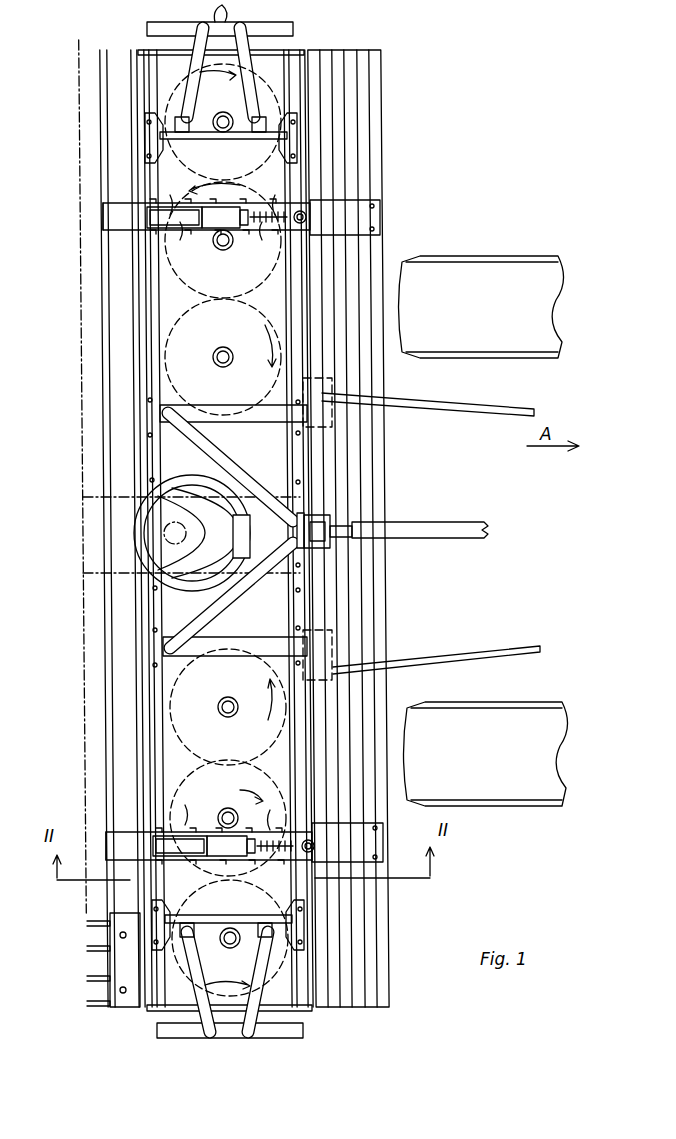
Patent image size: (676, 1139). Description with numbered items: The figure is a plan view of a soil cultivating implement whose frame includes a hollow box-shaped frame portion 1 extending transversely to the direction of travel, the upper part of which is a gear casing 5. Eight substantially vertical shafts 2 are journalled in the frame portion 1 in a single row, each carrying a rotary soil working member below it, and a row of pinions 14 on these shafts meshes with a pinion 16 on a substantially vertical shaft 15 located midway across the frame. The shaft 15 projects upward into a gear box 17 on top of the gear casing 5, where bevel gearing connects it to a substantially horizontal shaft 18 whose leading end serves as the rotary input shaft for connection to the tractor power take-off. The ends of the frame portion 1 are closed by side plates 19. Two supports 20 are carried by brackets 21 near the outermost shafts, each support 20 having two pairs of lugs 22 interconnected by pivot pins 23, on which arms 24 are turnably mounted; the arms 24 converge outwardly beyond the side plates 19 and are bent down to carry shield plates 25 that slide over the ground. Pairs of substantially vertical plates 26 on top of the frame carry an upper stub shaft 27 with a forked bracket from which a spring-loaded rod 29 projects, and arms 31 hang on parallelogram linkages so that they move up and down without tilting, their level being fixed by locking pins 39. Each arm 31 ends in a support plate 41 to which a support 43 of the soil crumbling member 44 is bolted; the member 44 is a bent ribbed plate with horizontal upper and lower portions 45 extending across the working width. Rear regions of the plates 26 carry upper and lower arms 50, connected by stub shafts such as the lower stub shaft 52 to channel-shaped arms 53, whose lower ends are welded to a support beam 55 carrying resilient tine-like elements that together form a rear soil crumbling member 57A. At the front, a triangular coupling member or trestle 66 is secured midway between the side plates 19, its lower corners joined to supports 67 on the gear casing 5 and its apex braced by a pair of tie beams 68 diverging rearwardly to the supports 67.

The hollow box-shaped frame portion 1 is at (143, 688).
The shafts 2 is at (222, 112).
The upper gear casing 5 is at (160, 366).
The pinions 14 is at (192, 318).
The substantially vertical shaft 15 is at (148, 535).
The pinion 16 is at (140, 520).
The gear box 17 is at (178, 545).
The substantially horizontal shaft 18 is at (300, 522).
The side plates 19 is at (138, 50).
The supports 20 is at (235, 140).
The brackets 21 is at (148, 133).
The lugs 22 is at (185, 105).
The pivot pins 23 is at (285, 62).
The arms 24 is at (185, 1050).
The shield plates 25 is at (275, 22).
The substantially vertical plates 26 is at (165, 198).
The upper stub shaft 27 is at (235, 240).
The rod 29 is at (264, 238).
The arm 31 is at (343, 217).
The locking pins 39 is at (276, 203).
The support plate 41 is at (365, 218).
The support 43 is at (368, 640).
The soil crumbling member 44 is at (398, 109).
The upper and lower portions 45 is at (385, 616).
The upper and lower arms 50 is at (178, 210).
The lower stub shaft 52 is at (95, 978).
The arms 53 is at (103, 224).
The support beam 55 is at (120, 335).
The rear soil crumbling member 57A is at (78, 952).
The coupling member or trestle 66 is at (322, 450).
The supports 67 is at (243, 406).
The tie beams 68 is at (270, 450).